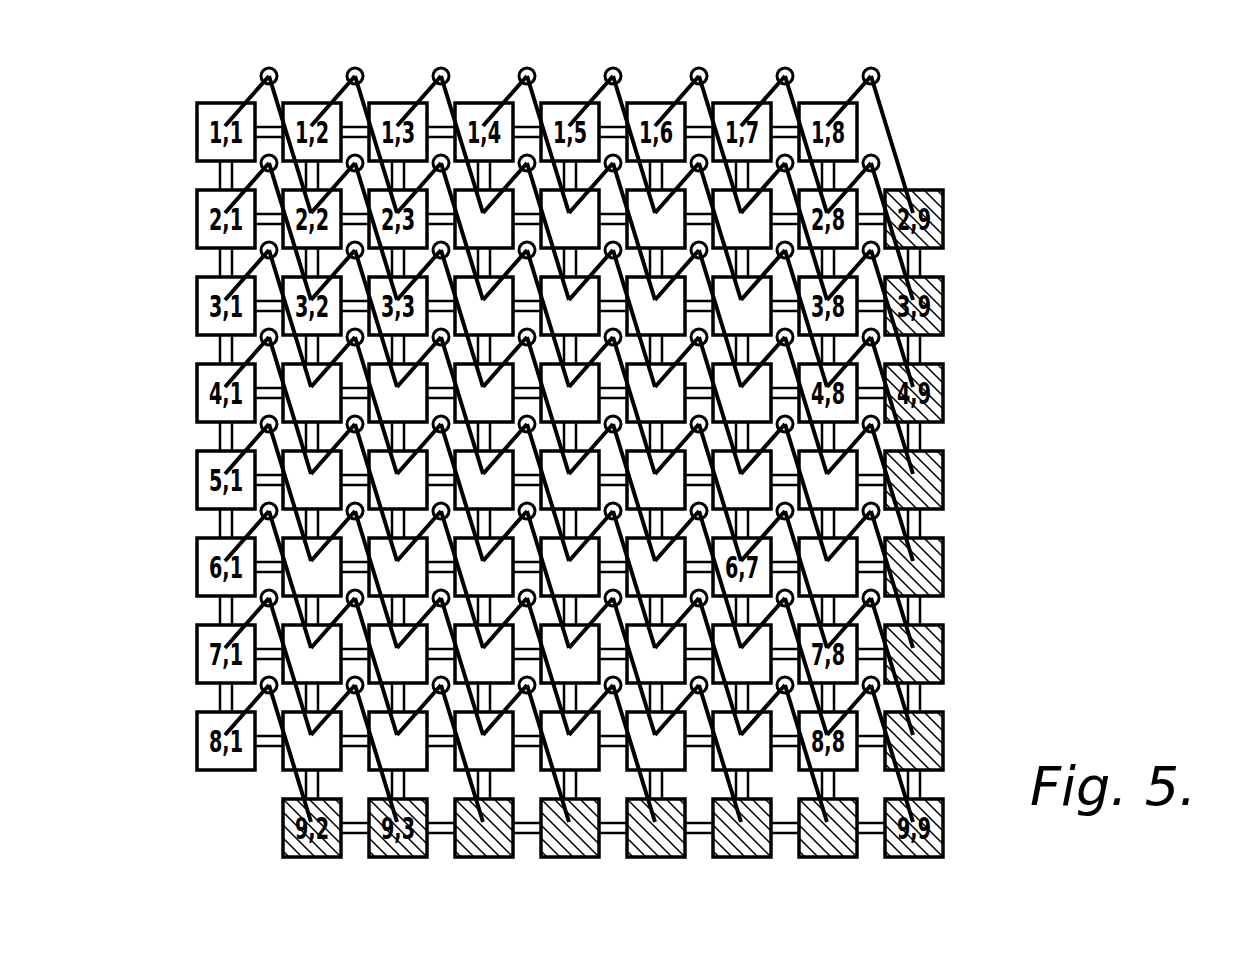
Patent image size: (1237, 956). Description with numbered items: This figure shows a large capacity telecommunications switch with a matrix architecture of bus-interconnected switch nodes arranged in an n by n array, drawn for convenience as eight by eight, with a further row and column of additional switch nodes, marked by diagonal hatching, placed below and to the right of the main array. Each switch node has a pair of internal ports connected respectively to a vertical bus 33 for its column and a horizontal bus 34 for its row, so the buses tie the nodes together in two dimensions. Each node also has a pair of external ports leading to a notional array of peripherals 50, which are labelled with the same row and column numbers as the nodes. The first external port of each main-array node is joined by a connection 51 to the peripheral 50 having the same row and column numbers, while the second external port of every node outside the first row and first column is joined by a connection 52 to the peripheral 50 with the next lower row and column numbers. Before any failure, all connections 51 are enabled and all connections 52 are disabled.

The vertical bus 33 is at (222, 520).
The horizontal bus 34 is at (270, 742).
The peripheral 50 is at (862, 74).
The connection 51 is at (231, 380).
The connection 52 is at (920, 185).